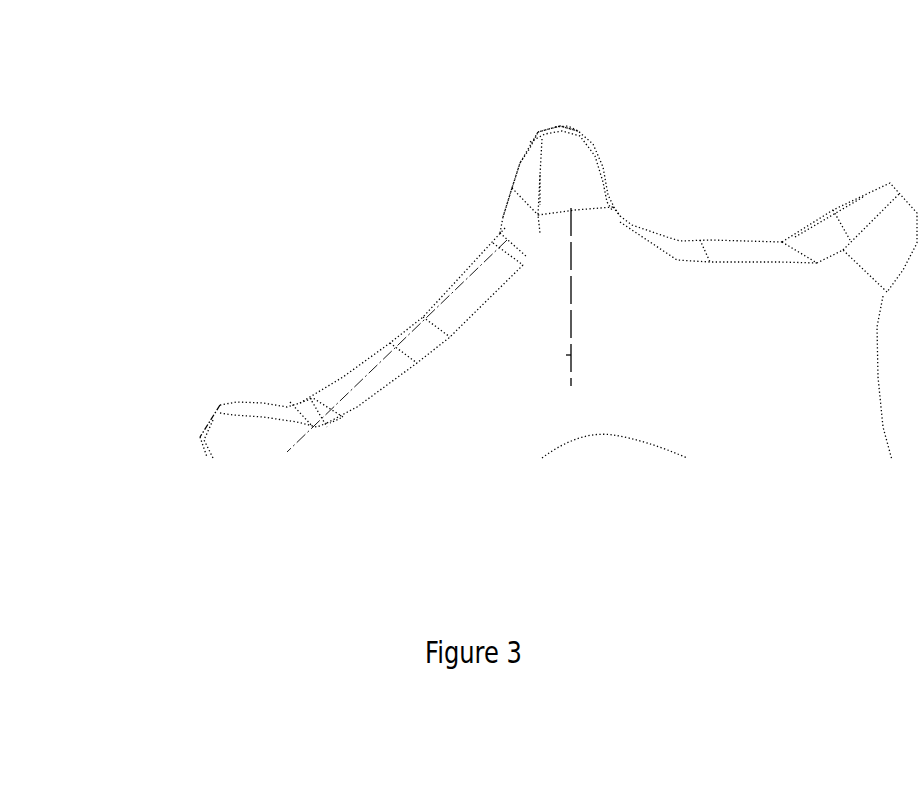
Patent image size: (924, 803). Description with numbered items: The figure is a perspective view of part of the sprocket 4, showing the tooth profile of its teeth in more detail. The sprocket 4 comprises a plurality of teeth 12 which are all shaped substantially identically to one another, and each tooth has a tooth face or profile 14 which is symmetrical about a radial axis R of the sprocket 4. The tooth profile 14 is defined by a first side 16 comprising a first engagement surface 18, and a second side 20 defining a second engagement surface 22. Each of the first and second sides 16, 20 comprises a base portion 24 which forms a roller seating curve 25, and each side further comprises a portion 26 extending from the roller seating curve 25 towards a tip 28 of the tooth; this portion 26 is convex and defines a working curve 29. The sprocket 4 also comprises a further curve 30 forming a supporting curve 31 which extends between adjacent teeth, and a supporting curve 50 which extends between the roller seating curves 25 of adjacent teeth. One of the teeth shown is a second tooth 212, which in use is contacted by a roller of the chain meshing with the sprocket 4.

The sprocket 4 is at (282, 303).
The teeth 12 is at (588, 213).
The tooth face or profile 14 is at (588, 178).
The first side 16 is at (520, 193).
The first engagement surface 18 is at (520, 193).
The second side 20 is at (250, 402).
The second engagement surface 22 is at (230, 405).
The base portion 24 is at (288, 403).
The roller seating curve 25 is at (293, 418).
The portion extending towards tip 26 is at (537, 157).
The tip 28 is at (568, 127).
The working curve 29 is at (522, 160).
The further curve 30 is at (482, 288).
The supporting curve 31 is at (457, 290).
The supporting curve 50 is at (405, 343).
The second tooth 212 is at (451, 169).
The radial axis R is at (571, 362).